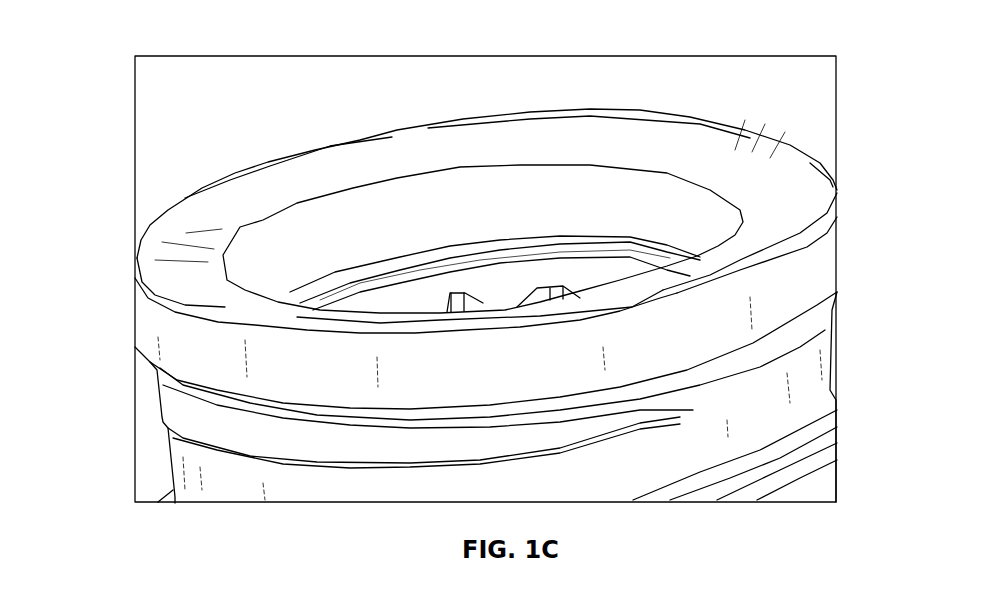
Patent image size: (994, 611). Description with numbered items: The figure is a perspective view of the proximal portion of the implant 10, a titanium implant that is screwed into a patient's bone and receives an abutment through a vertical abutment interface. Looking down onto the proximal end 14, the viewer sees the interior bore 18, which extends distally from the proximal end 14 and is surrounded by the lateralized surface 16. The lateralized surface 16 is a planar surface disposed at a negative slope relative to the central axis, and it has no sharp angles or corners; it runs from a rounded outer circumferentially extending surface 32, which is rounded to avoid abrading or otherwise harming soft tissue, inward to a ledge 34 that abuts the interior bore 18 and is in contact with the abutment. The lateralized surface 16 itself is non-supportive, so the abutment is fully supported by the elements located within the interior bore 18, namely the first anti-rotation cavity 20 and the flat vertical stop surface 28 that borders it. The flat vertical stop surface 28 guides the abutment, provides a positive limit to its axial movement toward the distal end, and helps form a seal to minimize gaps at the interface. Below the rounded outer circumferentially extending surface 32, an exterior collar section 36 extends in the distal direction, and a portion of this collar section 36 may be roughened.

The implant 10 is at (848, 297).
The proximal end 14 is at (581, 85).
The lateralized surface 16 is at (264, 190).
The interior bore 18 is at (478, 217).
The first anti-rotation cavity 20 is at (560, 297).
The flat vertical stop surface 28 is at (837, 193).
The rounded outer circumferentially extending surface 32 is at (801, 255).
The ledge 34 is at (352, 190).
The exterior collar section 36 is at (203, 340).